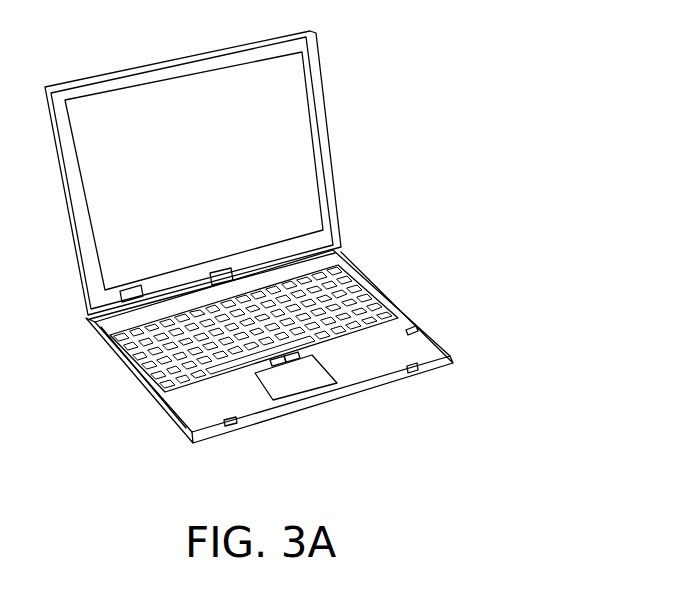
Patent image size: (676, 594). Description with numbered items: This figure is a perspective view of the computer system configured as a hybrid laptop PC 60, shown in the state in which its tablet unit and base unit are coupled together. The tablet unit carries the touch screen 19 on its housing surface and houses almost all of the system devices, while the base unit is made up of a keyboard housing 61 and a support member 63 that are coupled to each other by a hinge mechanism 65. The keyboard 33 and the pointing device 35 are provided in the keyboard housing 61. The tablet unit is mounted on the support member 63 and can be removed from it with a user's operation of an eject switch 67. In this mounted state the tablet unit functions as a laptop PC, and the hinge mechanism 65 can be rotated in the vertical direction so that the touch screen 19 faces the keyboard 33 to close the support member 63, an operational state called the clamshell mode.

The hybrid laptop PC 60 is at (504, 71).
The support member 63 is at (331, 127).
The touch screen 19 is at (213, 172).
The hinge mechanism 65 is at (222, 268).
The eject switch 67 is at (130, 288).
The keyboard housing 61 is at (391, 300).
The keyboard 33 is at (369, 255).
The pointing device 35 is at (303, 378).